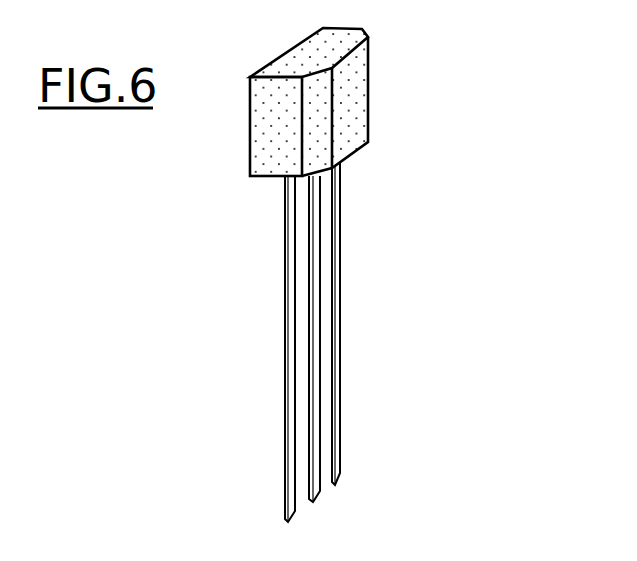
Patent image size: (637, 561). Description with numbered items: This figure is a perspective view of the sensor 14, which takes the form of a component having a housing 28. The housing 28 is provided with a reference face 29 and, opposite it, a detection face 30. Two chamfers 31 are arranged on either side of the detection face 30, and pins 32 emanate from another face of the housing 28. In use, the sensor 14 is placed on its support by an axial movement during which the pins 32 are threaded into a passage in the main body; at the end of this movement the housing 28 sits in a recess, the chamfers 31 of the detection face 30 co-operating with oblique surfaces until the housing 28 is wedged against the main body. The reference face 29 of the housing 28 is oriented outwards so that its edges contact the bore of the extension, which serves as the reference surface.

The sensor 14 is at (498, 131).
The housing 28 is at (328, 98).
The reference face 29 is at (274, 61).
The detection face 30 is at (357, 113).
The chamfers 31 is at (370, 31).
The pins 32 is at (360, 287).